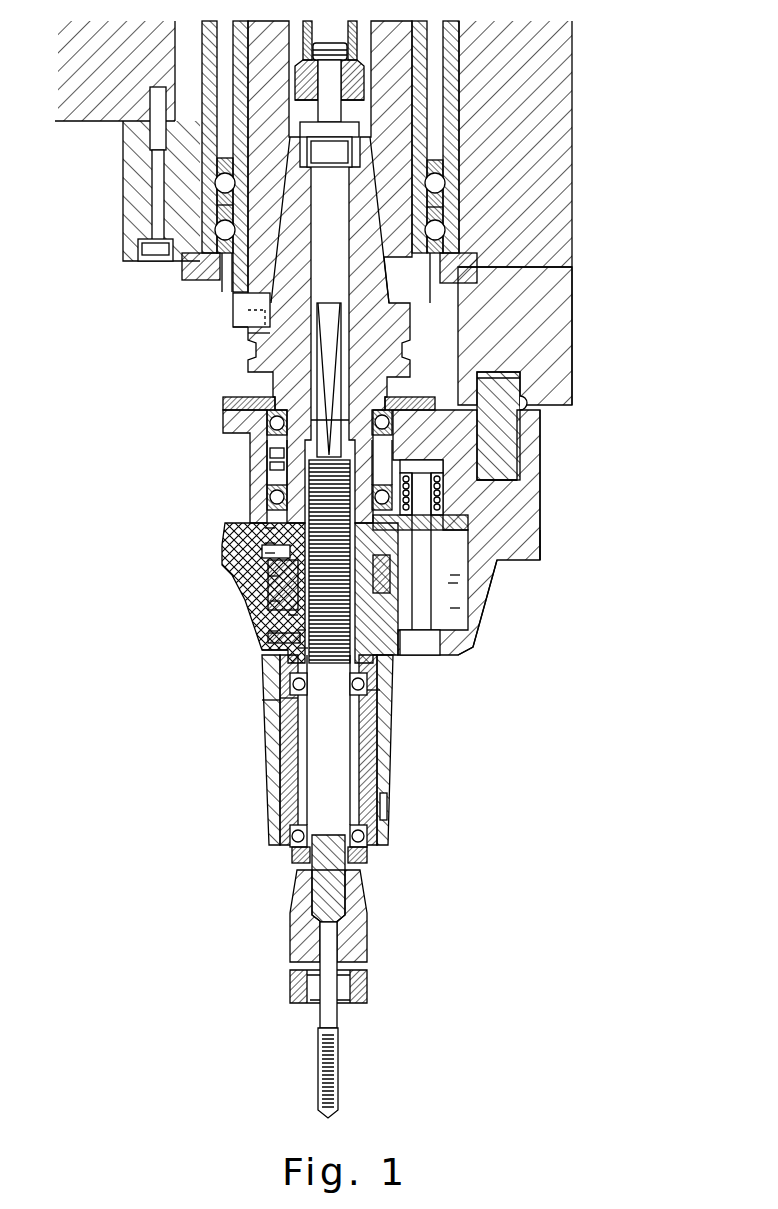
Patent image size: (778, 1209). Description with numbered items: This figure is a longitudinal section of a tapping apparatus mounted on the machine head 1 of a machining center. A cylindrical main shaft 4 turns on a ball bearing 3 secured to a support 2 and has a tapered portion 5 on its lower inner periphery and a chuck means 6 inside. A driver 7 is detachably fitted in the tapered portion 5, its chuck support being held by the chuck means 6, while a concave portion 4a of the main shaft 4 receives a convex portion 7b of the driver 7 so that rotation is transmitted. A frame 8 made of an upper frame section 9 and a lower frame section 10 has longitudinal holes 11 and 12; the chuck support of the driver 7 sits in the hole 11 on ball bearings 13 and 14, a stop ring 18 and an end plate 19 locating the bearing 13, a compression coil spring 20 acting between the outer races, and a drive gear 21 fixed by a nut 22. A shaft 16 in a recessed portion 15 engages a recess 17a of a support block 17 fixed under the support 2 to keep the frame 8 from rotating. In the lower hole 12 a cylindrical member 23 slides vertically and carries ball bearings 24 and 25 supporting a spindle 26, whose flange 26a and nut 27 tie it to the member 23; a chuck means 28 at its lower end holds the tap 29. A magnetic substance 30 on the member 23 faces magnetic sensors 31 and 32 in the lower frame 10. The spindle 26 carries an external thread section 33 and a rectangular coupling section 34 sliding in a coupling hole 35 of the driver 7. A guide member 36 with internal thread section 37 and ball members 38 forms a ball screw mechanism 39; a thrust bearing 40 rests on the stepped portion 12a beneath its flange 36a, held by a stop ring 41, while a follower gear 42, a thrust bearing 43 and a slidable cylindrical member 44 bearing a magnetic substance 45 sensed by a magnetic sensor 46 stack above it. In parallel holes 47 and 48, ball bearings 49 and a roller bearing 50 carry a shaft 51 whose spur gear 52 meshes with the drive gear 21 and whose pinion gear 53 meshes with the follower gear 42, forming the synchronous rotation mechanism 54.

The machine head 1 is at (62, 125).
The support 2 is at (122, 240).
The ball bearing 3 is at (462, 175).
The main shaft 4 is at (388, 40).
The concave portion 4a is at (235, 305).
The tapered portion 5 is at (386, 290).
The chuck means 6 is at (300, 60).
The driver 7 is at (247, 365).
The convex portion 7b is at (250, 320).
The frame 8 is at (552, 550).
The upper frame section 9 is at (542, 480).
The lower frame section 10 is at (470, 650).
The longitudinal hole 11 is at (278, 455).
The longitudinal hole 12 is at (270, 590).
The intermediate stepped portion 12a is at (272, 663).
The ball bearing 13 is at (225, 420).
The ball bearing 14 is at (272, 498).
The recessed portion 15 is at (517, 450).
The shaft 16 is at (520, 378).
The support block 17 is at (573, 325).
The recess 17a is at (520, 400).
The stop ring 18 is at (268, 438).
The end plate 19 is at (228, 398).
The compression coil spring 20 is at (277, 483).
The drive gear 21 is at (268, 515).
The nut 22 is at (272, 565).
The cylindrical member 23 is at (383, 775).
The ball bearing 24 is at (362, 710).
The ball bearing 25 is at (385, 845).
The spindle 26 is at (355, 745).
The flange 26a is at (278, 700).
The nut 27 is at (370, 870).
The chuck means 28 is at (370, 945).
The tap 29 is at (340, 1075).
The magnetic substance 30 is at (380, 690).
The magnetic sensor 31 is at (365, 683).
The magnetic sensor 32 is at (390, 812).
The external thread section 33 is at (450, 560).
The coupling section 34 is at (333, 305).
The coupling hole 35 is at (340, 400).
The guide member 36 is at (268, 620).
The outer peripheral flange 36a is at (270, 648).
The internal thread section 37 is at (302, 650).
The ball members 38 is at (268, 633).
The ball screw mechanism 39 is at (283, 700).
The thrust bearing 40 is at (290, 620).
The stop ring 41 is at (300, 632).
The follower gear 42 is at (270, 603).
The thrust bearing 43 is at (268, 578).
The cylindrical member 44 is at (265, 530).
The magnetic substance 45 is at (265, 555).
The magnetic sensor 46 is at (265, 545).
The longitudinal hole 47 is at (415, 467).
The longitudinal hole 48 is at (437, 652).
The ball bearings 49 is at (443, 500).
The roller bearing 50 is at (455, 610).
The shaft 51 is at (420, 635).
The spur gear 52 is at (426, 535).
The pinion gear 53 is at (452, 585).
The synchronous rotation mechanism 54 is at (455, 578).